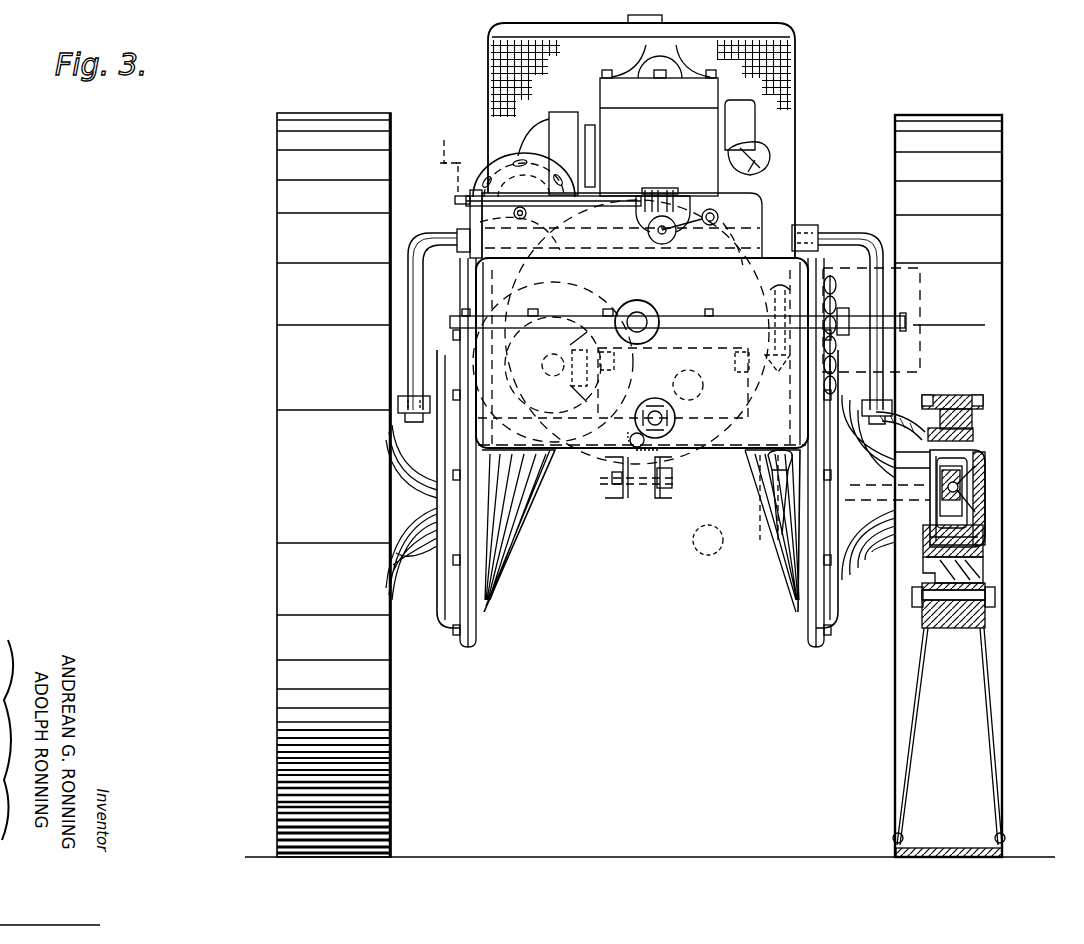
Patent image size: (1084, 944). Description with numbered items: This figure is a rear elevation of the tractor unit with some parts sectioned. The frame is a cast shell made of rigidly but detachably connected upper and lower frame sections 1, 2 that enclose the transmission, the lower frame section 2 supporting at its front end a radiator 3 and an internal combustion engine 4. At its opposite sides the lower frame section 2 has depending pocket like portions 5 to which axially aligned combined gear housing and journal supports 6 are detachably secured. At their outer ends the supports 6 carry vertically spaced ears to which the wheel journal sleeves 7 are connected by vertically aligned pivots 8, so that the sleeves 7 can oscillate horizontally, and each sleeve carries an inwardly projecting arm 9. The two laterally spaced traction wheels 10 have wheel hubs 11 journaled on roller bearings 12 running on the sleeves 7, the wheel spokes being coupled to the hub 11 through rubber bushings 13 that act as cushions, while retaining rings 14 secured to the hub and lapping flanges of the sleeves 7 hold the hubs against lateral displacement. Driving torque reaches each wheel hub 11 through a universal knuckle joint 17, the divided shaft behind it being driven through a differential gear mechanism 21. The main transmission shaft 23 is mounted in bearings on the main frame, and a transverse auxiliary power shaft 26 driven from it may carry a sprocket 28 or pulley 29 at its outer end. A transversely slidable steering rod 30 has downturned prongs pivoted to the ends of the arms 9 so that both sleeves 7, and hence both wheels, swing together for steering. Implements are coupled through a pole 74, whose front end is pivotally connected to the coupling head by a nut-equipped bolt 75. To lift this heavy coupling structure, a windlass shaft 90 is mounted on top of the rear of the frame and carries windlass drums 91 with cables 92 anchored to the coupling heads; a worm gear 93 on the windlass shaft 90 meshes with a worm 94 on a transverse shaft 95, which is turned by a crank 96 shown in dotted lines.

The upper frame section 1 is at (470, 279).
The lower frame section 2 is at (696, 442).
The radiator 3 is at (787, 62).
The internal combustion engine 4 is at (659, 120).
The depending pocket like portions 5 is at (505, 565).
The combined gear housing and journal support 6 is at (445, 600).
The wheel journal sleeve 7 is at (988, 441).
The pivot 8 is at (975, 432).
The arm 9 is at (400, 404).
The traction wheel 10 is at (391, 815).
The wheel hub 11 is at (986, 495).
The roller bearing 12 is at (985, 545).
The rubber bushing 13 is at (952, 628).
The retaining ring 14 is at (930, 412).
The universal knuckle joint 17 is at (958, 487).
The differential gear mechanism 21 is at (772, 465).
The main transmission shaft 23 is at (640, 320).
The auxiliary power shaft 26 is at (906, 322).
The sprocket 28 is at (836, 290).
The pulley 29 is at (913, 268).
The steering rod 30 is at (408, 298).
The pole 74 is at (637, 492).
The nut-equipped bolt 75 is at (612, 478).
The windlass shaft 90 is at (663, 236).
The windlass drum 91 is at (719, 217).
The cable 92 is at (688, 385).
The worm gear 93 is at (638, 222).
The worm 94 is at (672, 193).
The transverse shaft 95 is at (598, 198).
The crank 96 is at (444, 130).